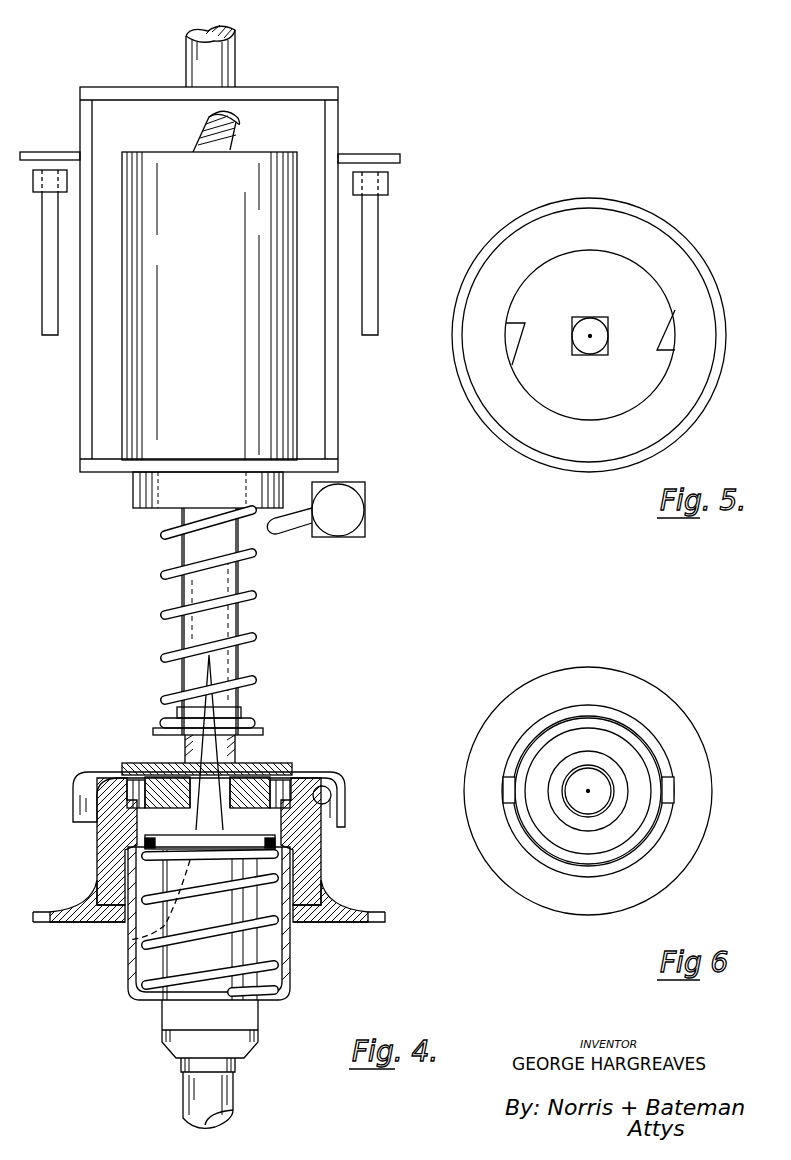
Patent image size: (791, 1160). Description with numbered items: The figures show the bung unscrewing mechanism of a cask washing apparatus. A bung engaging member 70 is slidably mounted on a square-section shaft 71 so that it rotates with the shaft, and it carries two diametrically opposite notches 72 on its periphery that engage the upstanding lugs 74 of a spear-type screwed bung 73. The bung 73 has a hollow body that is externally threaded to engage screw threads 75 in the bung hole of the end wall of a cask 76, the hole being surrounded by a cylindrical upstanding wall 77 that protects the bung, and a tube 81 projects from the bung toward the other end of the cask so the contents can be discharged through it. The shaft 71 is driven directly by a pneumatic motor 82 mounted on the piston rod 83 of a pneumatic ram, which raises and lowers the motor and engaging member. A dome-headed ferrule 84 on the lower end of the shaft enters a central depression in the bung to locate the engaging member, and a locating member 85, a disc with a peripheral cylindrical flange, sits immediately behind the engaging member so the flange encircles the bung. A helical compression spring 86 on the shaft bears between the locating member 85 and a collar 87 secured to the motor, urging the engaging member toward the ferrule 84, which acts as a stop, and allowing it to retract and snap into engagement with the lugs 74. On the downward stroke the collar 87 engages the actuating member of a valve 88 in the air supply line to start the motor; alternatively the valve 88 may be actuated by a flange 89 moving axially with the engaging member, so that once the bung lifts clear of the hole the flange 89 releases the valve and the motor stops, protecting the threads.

In FIG. 4, the bung engaging member 70 is at (278, 762).
In FIG. 5, the bung engaging member 70 is at (640, 290).
In FIG. 4, the shaft 71 is at (182, 681).
In FIG. 5, the notches 72 is at (662, 334).
In FIG. 4, the screwed bung 73 is at (295, 982).
In FIG. 4, the upstanding lugs 74 is at (105, 762).
In FIG. 6, the upstanding lugs 74 is at (507, 790).
In FIG. 4, the screw threads 75 is at (308, 797).
In FIG. 4, the cask 76 is at (380, 920).
In FIG. 4, the cylindrical upstanding wall 77 is at (322, 866).
In FIG. 4, the tube 81 is at (234, 1104).
In FIG. 4, the pneumatic motor 82 is at (288, 411).
In FIG. 4, the piston rod 83 is at (236, 47).
In FIG. 4, the dome-headed ferrule 84 is at (128, 940).
In FIG. 4, the locating member 85 is at (75, 807).
In FIG. 4, the helical compression spring 86 is at (256, 636).
In FIG. 4, the collar 87 is at (133, 500).
In FIG. 4, the valve 88 is at (346, 530).
In FIG. 4, the flange 89 is at (262, 731).